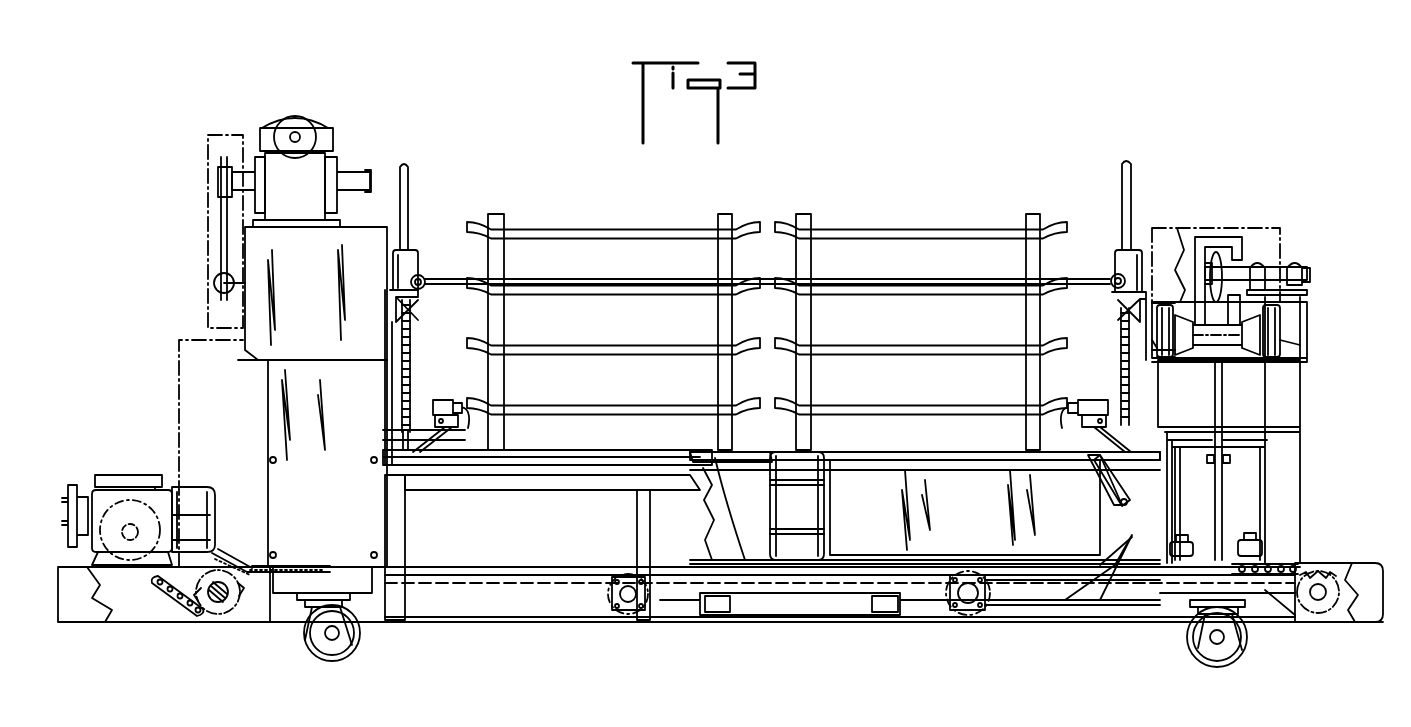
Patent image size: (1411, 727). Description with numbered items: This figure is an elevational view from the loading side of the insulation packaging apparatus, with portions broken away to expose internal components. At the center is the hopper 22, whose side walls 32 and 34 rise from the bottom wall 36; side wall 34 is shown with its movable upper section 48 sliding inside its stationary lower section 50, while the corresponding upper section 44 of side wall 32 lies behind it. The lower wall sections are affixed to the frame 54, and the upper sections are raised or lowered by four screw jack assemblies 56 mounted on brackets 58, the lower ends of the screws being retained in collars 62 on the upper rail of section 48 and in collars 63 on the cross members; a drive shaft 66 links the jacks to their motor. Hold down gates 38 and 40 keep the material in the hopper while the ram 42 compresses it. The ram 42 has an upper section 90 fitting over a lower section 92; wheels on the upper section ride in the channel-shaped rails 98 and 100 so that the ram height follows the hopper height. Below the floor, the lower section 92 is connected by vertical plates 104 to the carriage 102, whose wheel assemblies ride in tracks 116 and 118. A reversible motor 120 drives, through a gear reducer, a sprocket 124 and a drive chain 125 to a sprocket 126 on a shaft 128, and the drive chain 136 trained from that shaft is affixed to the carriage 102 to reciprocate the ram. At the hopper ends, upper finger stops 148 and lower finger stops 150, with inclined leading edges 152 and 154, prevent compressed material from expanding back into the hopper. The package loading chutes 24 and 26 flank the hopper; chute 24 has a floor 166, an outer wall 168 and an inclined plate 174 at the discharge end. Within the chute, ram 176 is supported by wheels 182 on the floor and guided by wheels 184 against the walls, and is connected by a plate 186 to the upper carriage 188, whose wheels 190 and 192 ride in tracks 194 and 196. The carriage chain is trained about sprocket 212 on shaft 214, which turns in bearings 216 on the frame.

The hopper 22 is at (617, 628).
The package loading chute 24 is at (1305, 445).
The package loading chute 26 is at (172, 367).
The side wall 32 is at (950, 497).
The side wall 34 is at (527, 586).
The bottom wall 36 is at (1068, 562).
The hold down gate 38 is at (955, 232).
The hold down gate 40 is at (645, 232).
The ram 42 is at (828, 500).
The upper section 44 is at (953, 491).
The upper section 48 is at (710, 488).
The lower section 50 is at (688, 534).
The frame 54 is at (393, 572).
The screw jack assembly 56 is at (410, 255).
The bracket 58 is at (412, 300).
The collar 62 is at (415, 437).
The collar 63 is at (1125, 425).
The drive shaft 66 is at (745, 283).
The upper section 90 is at (825, 478).
The lower section 92 is at (825, 555).
The channel 98 is at (1080, 456).
The channel 100 is at (620, 455).
The carriage 102 is at (920, 612).
The vertical plate 104 is at (815, 597).
The track 116 is at (1023, 582).
The track 118 is at (555, 615).
The reversible motor 120 is at (100, 492).
The sprocket 124 is at (130, 500).
The drive chain 125 is at (168, 597).
The sprocket 126 is at (228, 612).
The shaft 128 is at (212, 600).
The drive chain 136 is at (275, 568).
The upper finger stop 148 is at (1122, 463).
The lower finger stop 150 is at (1110, 575).
The leading edge 152 is at (1118, 545).
The leading edge 154 is at (1092, 462).
The floor 166 is at (1265, 552).
The outer wall 168 is at (1265, 480).
The inclined plate 174 is at (1247, 442).
The ram 176 is at (1235, 505).
The wheel 182 is at (1246, 542).
The wheel 184 is at (1182, 542).
The vertically extending plate 186 is at (1222, 400).
The carriage 188 is at (1200, 365).
The wheels 190 is at (1283, 318).
The wheels 192 is at (1157, 330).
The track 194 is at (1283, 345).
The track 196 is at (1157, 348).
The sprocket 212 is at (1216, 260).
The shaft 214 is at (1270, 275).
The bearings 216 is at (1302, 270).